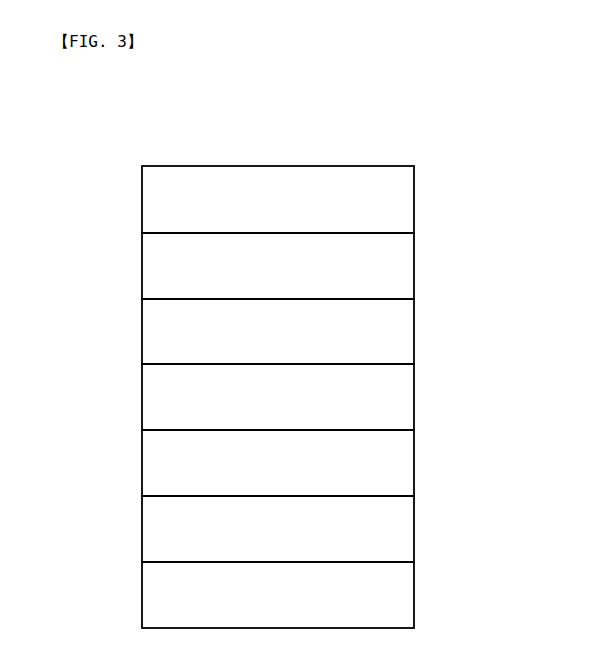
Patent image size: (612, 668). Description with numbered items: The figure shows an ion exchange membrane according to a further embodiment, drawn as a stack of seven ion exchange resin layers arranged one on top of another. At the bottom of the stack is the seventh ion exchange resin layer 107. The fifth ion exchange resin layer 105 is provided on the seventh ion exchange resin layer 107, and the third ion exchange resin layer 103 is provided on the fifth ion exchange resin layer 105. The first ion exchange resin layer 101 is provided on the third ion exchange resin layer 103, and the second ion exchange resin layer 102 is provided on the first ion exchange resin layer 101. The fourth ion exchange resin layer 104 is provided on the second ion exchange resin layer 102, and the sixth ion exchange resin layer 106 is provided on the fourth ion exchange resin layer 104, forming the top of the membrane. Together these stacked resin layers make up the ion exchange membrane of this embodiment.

The first ion exchange resin layer 101 is at (389, 390).
The second ion exchange resin layer 102 is at (389, 329).
The third ion exchange resin layer 103 is at (393, 467).
The fourth ion exchange resin layer 104 is at (388, 265).
The fifth ion exchange resin layer 105 is at (384, 535).
The sixth ion exchange resin layer 106 is at (383, 203).
The seventh ion exchange resin layer 107 is at (387, 599).